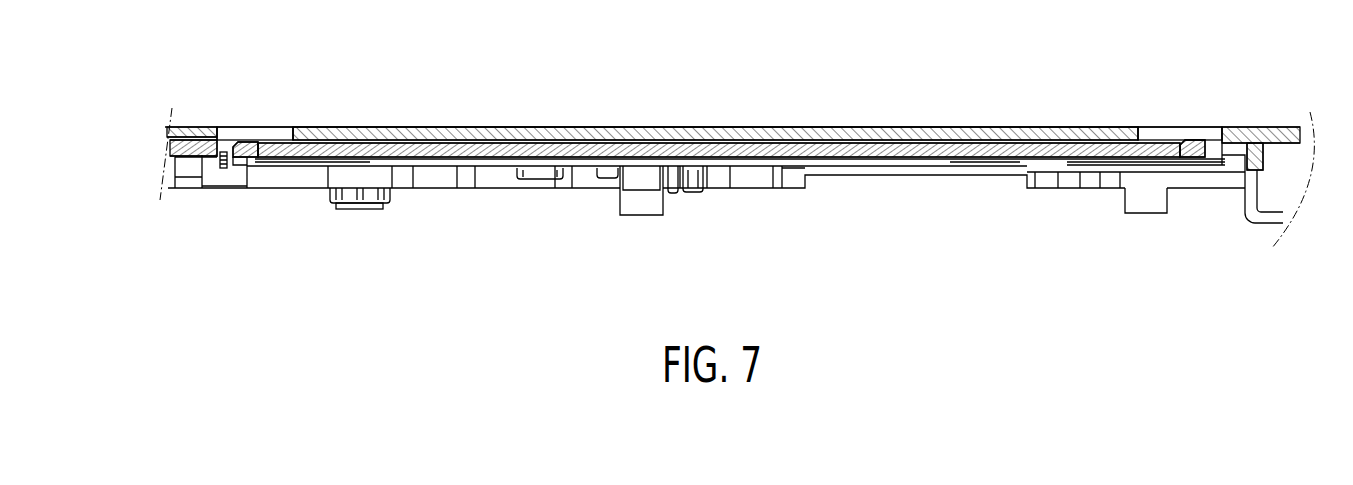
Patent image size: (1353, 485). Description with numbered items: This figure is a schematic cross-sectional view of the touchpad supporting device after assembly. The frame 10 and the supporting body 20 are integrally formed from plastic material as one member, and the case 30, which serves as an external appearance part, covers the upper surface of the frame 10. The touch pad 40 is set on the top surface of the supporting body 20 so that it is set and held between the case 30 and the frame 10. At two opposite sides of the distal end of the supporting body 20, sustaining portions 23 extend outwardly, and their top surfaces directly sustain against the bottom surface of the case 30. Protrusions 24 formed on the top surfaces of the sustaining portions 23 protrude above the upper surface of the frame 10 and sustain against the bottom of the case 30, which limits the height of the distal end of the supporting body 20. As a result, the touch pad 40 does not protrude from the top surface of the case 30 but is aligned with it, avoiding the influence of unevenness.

The frame 10 is at (268, 177).
The supporting body 20 is at (410, 150).
The sustaining portion 23 is at (302, 152).
The protrusion 24 is at (243, 147).
The case 30 is at (272, 131).
The touch pad 40 is at (680, 138).